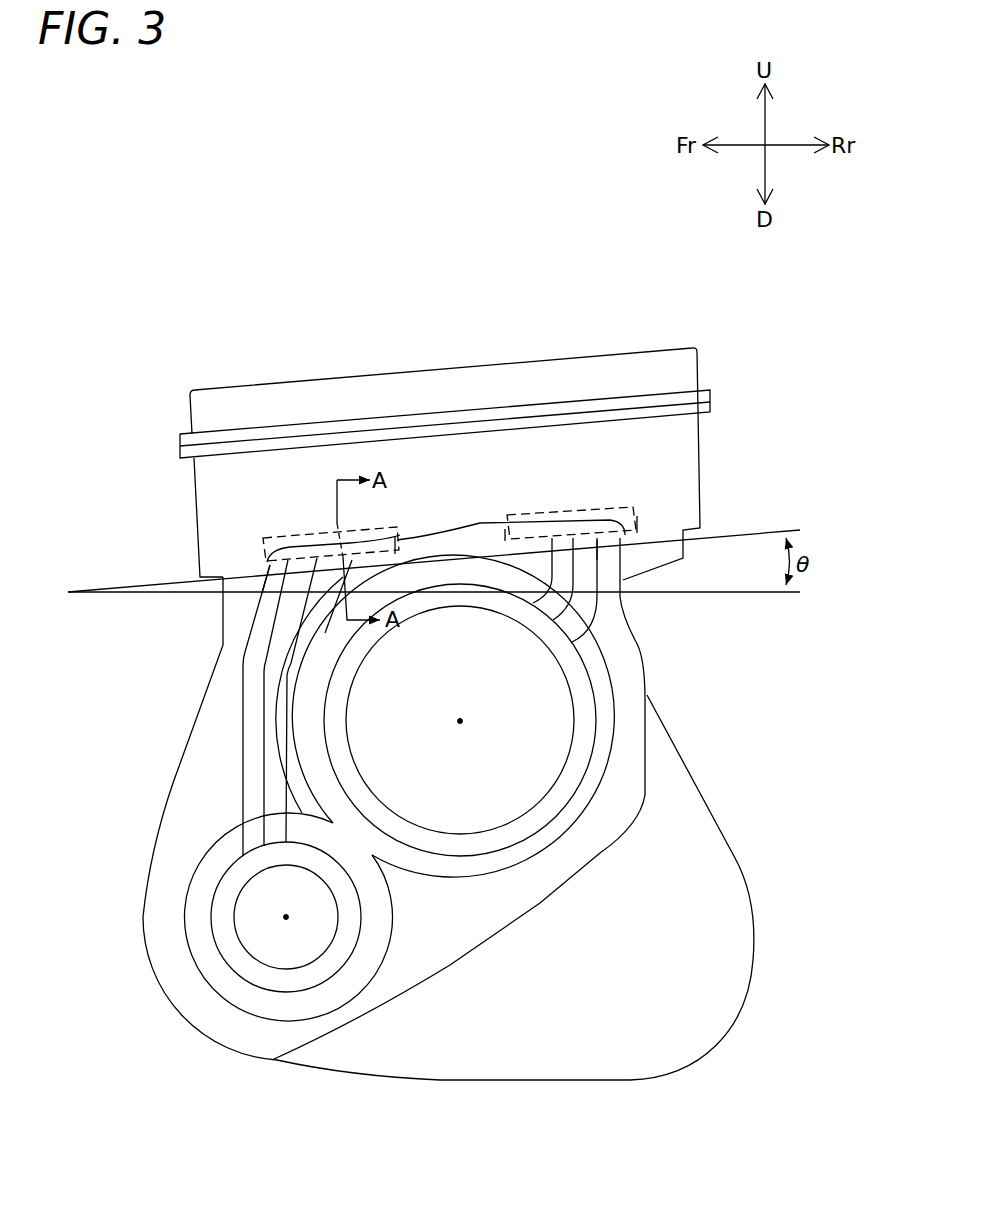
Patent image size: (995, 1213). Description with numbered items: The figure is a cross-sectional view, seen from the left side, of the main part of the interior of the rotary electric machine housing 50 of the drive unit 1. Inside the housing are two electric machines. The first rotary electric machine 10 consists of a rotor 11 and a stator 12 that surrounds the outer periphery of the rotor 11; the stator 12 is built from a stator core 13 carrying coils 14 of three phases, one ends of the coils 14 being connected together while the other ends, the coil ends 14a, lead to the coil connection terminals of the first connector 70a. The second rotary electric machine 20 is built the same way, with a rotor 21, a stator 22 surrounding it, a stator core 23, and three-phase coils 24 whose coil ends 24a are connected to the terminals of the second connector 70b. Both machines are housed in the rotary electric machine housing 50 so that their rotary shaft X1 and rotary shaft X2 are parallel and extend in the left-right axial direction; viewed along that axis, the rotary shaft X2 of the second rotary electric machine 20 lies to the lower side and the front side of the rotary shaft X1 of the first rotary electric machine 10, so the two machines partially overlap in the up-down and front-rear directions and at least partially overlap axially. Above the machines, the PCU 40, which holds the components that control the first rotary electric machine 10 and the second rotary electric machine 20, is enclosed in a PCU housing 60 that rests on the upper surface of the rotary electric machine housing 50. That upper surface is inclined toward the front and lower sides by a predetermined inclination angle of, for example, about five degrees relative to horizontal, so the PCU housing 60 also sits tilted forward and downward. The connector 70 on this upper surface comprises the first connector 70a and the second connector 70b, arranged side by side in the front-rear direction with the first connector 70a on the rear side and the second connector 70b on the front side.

The drive unit 1 is at (796, 344).
The first rotary electric machine 10 is at (552, 707).
The rotor 11 is at (478, 698).
The stator 12 is at (552, 707).
The stator core 13 is at (608, 753).
The coils 14 is at (560, 788).
The coil ends 14a is at (600, 547).
The second rotary electric machine 20 is at (218, 770).
The rotor 21 is at (260, 917).
The stator 22 is at (218, 770).
The stator core 23 is at (203, 896).
The coils 24 is at (240, 880).
The coil ends 24a is at (262, 606).
The PCU 40 is at (335, 407).
The rotary electric machine housing 50 is at (213, 663).
The PCU housing 60 is at (700, 364).
The connector 70 is at (553, 499).
The first connector 70a is at (640, 524).
The second connector 70b is at (400, 535).
The rotary shaft X1 is at (460, 721).
The rotary shaft X2 is at (284, 918).